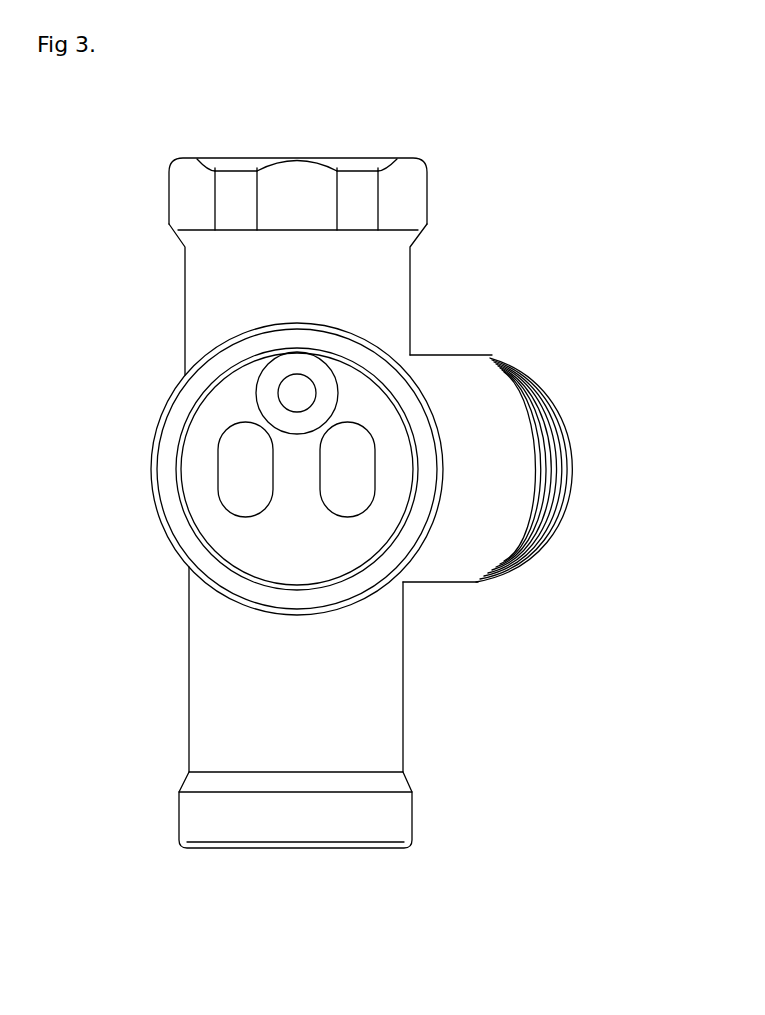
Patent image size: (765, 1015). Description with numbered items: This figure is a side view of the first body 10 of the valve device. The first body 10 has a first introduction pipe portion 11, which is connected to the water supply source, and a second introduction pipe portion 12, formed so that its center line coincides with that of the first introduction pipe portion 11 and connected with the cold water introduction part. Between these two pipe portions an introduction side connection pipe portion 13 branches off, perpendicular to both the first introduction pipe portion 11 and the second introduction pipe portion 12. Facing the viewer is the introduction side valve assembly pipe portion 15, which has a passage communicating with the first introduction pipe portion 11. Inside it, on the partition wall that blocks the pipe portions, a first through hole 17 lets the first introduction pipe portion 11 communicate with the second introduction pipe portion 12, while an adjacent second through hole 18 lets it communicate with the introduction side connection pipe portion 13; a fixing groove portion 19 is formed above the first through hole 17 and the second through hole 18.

The first body 10 is at (349, 489).
The first introduction pipe portion 11 is at (403, 699).
The second introduction pipe portion 12 is at (410, 288).
The introduction side connection pipe portion 13 is at (507, 447).
The introduction side valve assembly pipe portion 15 is at (313, 490).
The first through hole 17 is at (240, 463).
The second through hole 18 is at (353, 478).
The fixing groove portion 19 is at (297, 392).